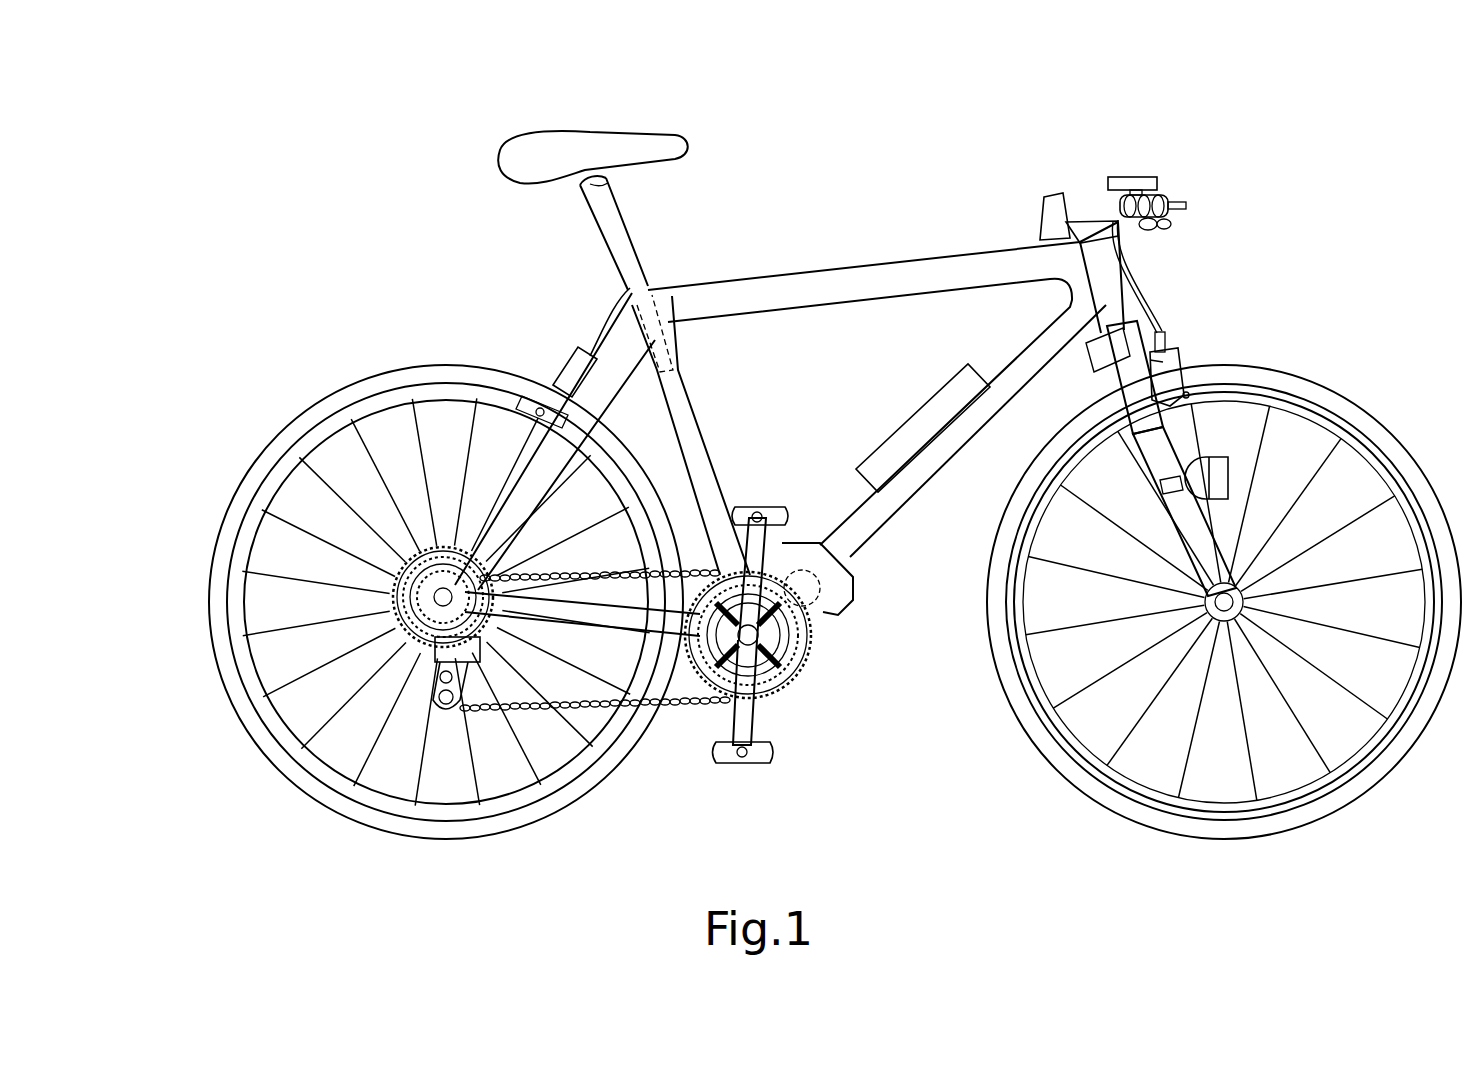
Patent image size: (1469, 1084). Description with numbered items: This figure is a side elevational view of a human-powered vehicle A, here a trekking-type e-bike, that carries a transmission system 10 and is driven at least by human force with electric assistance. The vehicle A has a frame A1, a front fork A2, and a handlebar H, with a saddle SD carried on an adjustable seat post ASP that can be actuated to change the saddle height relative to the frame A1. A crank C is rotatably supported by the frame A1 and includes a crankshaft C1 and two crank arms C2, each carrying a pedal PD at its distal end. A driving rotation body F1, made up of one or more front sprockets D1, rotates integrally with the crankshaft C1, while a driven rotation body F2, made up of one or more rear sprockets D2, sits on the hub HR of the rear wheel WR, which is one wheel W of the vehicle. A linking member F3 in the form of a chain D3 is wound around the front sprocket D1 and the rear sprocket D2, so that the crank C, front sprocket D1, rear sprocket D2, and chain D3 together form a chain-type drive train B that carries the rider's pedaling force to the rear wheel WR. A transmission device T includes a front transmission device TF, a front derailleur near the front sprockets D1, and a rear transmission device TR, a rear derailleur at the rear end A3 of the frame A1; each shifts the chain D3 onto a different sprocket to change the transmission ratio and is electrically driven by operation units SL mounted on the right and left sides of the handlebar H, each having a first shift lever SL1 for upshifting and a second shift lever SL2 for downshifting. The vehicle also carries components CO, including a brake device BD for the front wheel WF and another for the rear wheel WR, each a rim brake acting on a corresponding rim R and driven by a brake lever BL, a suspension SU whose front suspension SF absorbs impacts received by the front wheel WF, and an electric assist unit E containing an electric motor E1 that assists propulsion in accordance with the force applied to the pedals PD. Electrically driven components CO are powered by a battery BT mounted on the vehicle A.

The human-powered vehicle A is at (1222, 96).
The transmission system 10 is at (806, 430).
The frame A1 is at (913, 231).
The front fork A2 is at (1170, 528).
The rear end A3 is at (453, 552).
The saddle SD is at (592, 131).
The adjustable seat post ASP is at (630, 229).
The front transmission device TF is at (667, 497).
The transmission device T is at (616, 543).
The battery BT is at (915, 413).
The component CO is at (1308, 264).
The handlebar H is at (1168, 210).
The brake lever BL is at (1160, 184).
The operation unit SL is at (1255, 290).
The first shift lever SL1 is at (1158, 228).
The second shift lever SL2 is at (1188, 228).
The front suspension SF is at (1127, 428).
The suspension SU is at (1131, 419).
The brake device BD is at (562, 367).
The rear wheel WR is at (360, 383).
The front wheel WF is at (1337, 382).
The wheel W is at (835, 581).
The rim R is at (285, 466).
The hub HR is at (505, 628).
The rear sprocket D2 is at (410, 575).
The driven rotation body F2 is at (317, 580).
The rear transmission device TR is at (476, 680).
The front sprocket D1 is at (683, 700).
The driving rotation body F1 is at (595, 715).
The chain D3 is at (550, 715).
The linking member F3 is at (595, 715).
The electric assist unit E is at (840, 605).
The electric motor E1 is at (846, 587).
The drive train B is at (810, 802).
The crank C is at (845, 730).
The crankshaft C1 is at (812, 660).
The crank arm C2 is at (778, 535).
The pedal PD is at (760, 505).